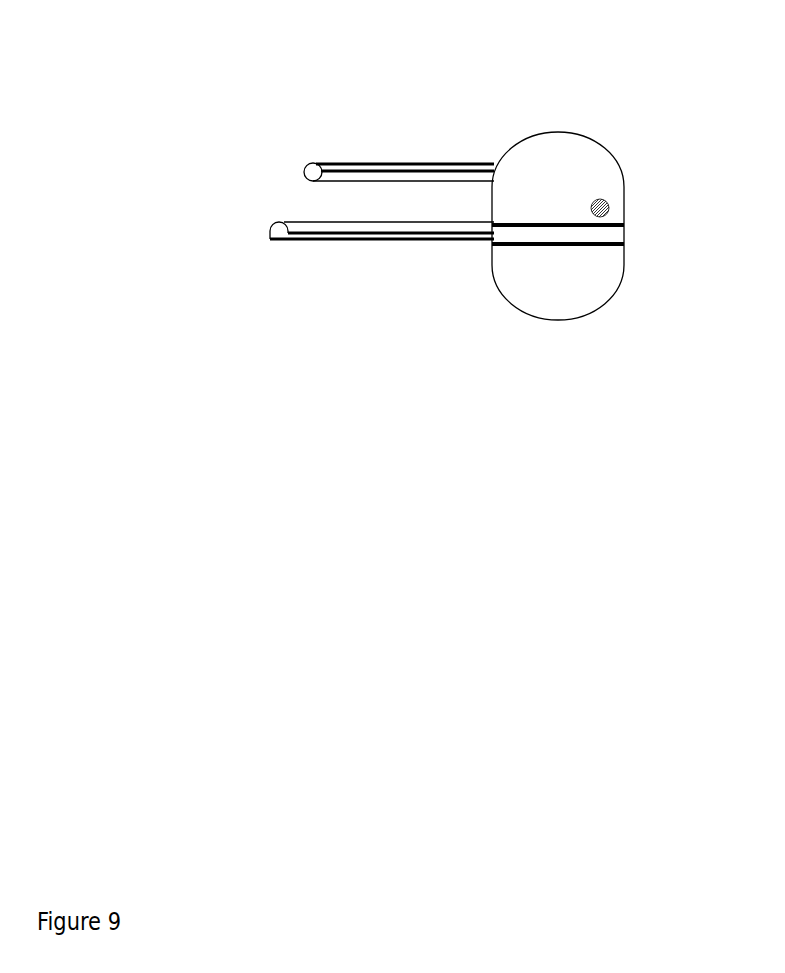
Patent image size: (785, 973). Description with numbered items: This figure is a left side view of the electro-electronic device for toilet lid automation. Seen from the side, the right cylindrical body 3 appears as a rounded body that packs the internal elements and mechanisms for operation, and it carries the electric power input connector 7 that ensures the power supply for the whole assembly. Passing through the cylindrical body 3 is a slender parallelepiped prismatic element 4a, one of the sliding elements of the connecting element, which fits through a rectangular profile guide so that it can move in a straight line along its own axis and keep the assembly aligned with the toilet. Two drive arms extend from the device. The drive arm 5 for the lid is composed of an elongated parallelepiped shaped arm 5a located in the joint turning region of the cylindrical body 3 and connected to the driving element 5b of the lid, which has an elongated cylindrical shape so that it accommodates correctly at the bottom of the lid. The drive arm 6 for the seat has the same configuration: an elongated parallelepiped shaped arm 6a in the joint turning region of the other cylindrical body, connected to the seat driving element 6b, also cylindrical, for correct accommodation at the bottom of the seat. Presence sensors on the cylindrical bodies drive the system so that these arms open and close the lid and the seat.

The right cylindrical body 3 is at (610, 137).
The slender parallelepiped prismatic element 4a is at (598, 241).
The drive arm for the lid 5 is at (328, 287).
The elongated parallelepiped shaped arm 5a is at (412, 243).
The driving element of the lid 5b is at (267, 222).
The drive arm for the seat 6 is at (332, 94).
The elongated parallelepiped shaped arm 6a is at (448, 157).
The seat driving element 6b is at (302, 161).
The electric power input connector 7 is at (623, 197).